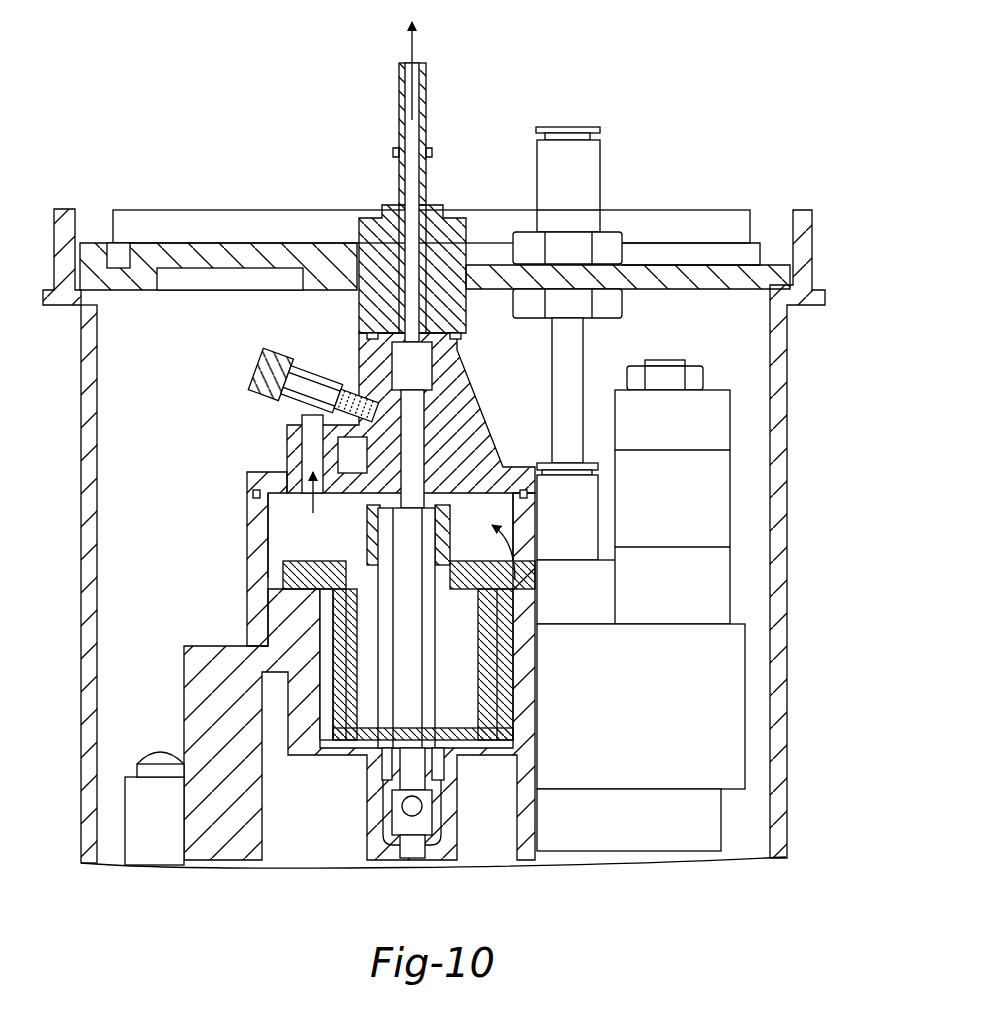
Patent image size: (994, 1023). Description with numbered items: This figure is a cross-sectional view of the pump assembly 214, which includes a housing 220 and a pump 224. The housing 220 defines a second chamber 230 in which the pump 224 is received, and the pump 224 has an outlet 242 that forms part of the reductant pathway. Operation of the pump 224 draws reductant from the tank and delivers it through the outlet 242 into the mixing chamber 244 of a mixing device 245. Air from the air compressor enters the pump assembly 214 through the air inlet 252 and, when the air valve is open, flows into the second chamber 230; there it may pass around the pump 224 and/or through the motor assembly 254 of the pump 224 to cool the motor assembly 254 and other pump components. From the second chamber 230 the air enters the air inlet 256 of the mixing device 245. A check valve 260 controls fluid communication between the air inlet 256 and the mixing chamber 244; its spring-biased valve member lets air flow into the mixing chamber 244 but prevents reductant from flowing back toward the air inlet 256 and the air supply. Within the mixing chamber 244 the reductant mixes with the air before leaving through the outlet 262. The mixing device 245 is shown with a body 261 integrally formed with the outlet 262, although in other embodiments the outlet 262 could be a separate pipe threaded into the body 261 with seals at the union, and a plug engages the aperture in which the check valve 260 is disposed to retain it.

The pump assembly 214 is at (606, 55).
The housing 220 is at (788, 468).
The pump 224 is at (352, 748).
The second chamber 230 is at (283, 538).
The outlet of the pump 242 is at (413, 407).
The mixing chamber 244 is at (407, 357).
The mixing device 245 is at (441, 100).
The air inlet 252 is at (580, 128).
The motor assembly 254 is at (462, 683).
The air inlet of the mixing device 256 is at (312, 445).
The check valve 260 is at (350, 395).
The body 261 is at (453, 383).
The outlet 262 is at (402, 100).